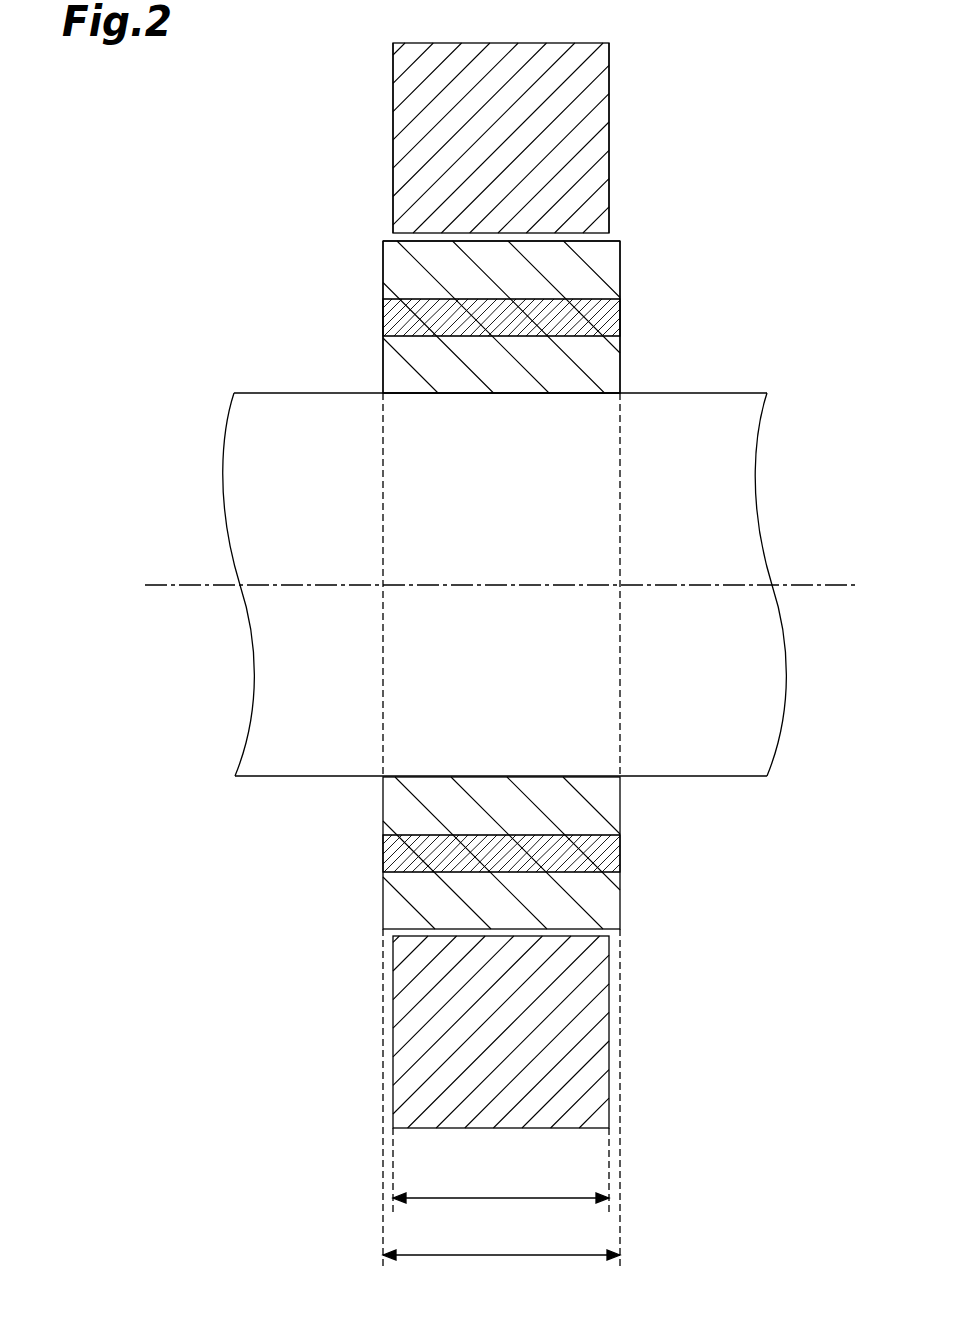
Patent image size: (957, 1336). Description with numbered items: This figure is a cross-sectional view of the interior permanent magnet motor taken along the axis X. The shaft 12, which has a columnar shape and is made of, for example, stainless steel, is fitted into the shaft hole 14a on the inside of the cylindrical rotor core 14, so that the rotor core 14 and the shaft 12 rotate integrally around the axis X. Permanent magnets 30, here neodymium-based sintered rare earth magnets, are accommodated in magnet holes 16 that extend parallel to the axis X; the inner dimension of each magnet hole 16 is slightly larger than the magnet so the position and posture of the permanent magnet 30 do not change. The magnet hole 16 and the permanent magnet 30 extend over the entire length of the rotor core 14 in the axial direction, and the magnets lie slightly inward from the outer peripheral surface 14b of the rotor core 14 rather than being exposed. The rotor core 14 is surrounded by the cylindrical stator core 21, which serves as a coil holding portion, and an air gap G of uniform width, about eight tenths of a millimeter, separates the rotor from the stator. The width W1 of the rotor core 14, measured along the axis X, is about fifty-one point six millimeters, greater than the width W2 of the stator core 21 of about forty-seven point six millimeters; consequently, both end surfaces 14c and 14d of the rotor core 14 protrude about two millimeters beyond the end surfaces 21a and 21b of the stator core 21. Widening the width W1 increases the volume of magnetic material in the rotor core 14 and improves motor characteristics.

The shaft 12 is at (262, 393).
The rotor core 14 is at (383, 262).
The shaft hole 14a is at (598, 404).
The outer peripheral surface 14b is at (600, 238).
The end surface 14c is at (383, 358).
The end surface 14d is at (620, 365).
The magnet hole 16 is at (598, 312).
The stator core 21 is at (393, 87).
The end surface 21a is at (393, 122).
The end surface 21b is at (612, 104).
The permanent magnet 30 is at (578, 305).
The air gap G is at (386, 240).
The axis X is at (836, 585).
The width of the rotor core W1 is at (501, 1243).
The width of the stator core W2 is at (501, 1170).